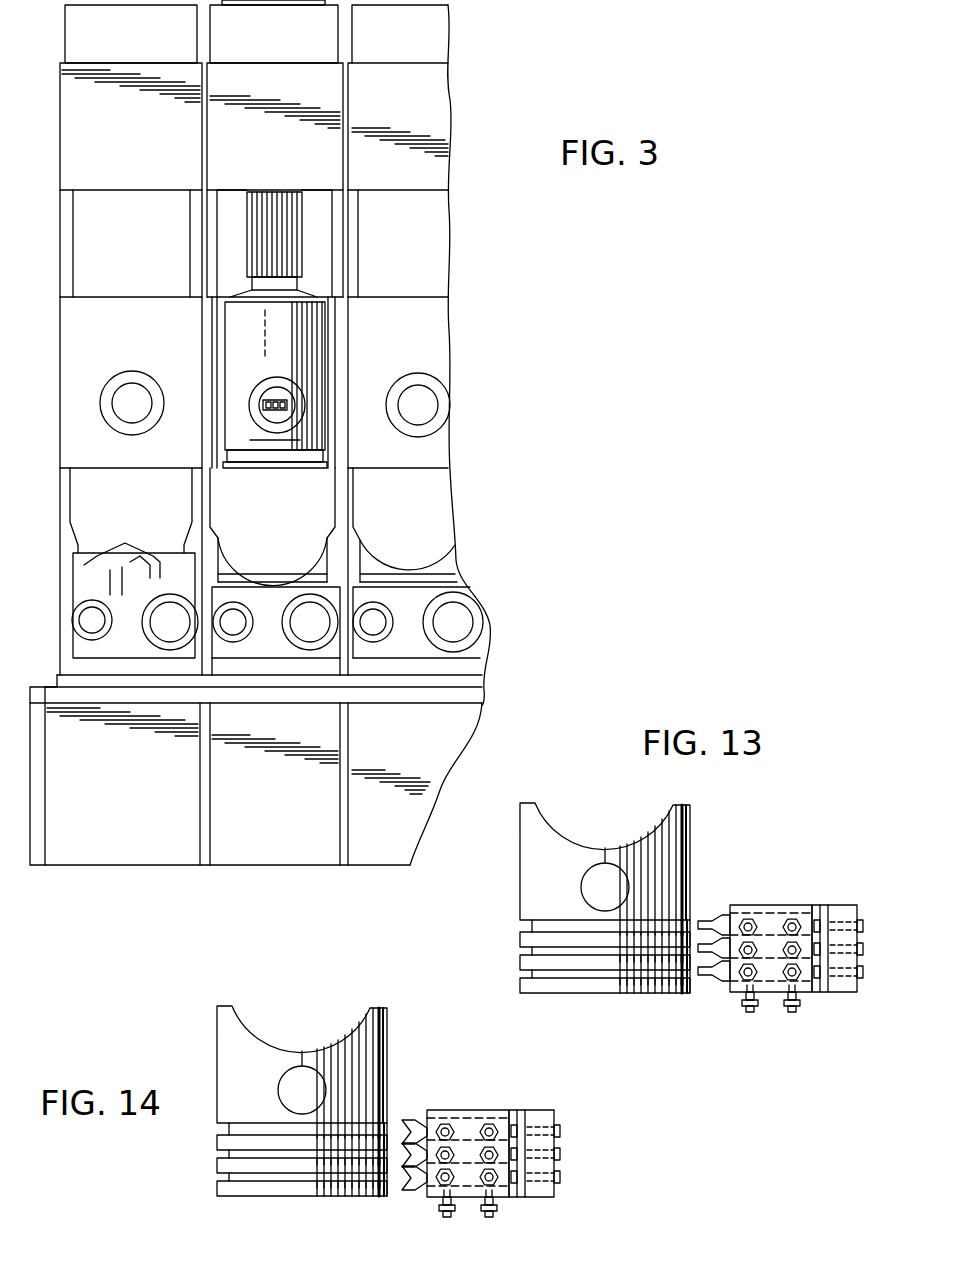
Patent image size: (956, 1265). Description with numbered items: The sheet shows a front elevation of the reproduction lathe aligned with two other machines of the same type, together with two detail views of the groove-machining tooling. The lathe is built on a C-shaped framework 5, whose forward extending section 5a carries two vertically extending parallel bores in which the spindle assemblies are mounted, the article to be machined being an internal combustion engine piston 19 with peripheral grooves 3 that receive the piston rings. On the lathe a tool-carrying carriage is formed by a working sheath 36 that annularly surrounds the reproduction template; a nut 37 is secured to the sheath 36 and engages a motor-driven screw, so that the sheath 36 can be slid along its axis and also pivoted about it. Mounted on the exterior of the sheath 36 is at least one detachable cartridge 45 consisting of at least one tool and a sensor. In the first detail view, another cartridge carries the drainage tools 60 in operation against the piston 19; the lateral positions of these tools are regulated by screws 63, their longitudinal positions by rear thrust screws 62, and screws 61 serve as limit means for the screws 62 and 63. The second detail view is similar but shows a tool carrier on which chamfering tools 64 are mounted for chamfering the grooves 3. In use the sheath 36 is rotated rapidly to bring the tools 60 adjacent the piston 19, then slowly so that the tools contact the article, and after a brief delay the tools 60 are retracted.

In FIG. 3, the nut 37 is at (272, 200).
In FIG. 3, the working sheath 36 is at (312, 328).
In FIG. 3, the framework 5 is at (283, 337).
In FIG. 3, the forward extending section 5a is at (284, 503).
In FIG. 3, the detachable cartridge 45 is at (295, 405).
In FIG. 13, the piston 19 is at (528, 823).
In FIG. 14, the piston 19 is at (232, 1055).
In FIG. 13, the peripheral grooves 3 is at (530, 950).
In FIG. 14, the peripheral grooves 3 is at (228, 1157).
In FIG. 13, the drainage tools 60 is at (708, 927).
In FIG. 13, the limit screws 61 is at (792, 925).
In FIG. 14, the limit screws 61 is at (489, 1130).
In FIG. 13, the rear thrust screws 62 is at (863, 925).
In FIG. 14, the rear thrust screws 62 is at (560, 1130).
In FIG. 13, the lateral position screws 63 is at (792, 1012).
In FIG. 14, the lateral position screws 63 is at (489, 1217).
In FIG. 14, the chamfering tools 64 is at (408, 1132).